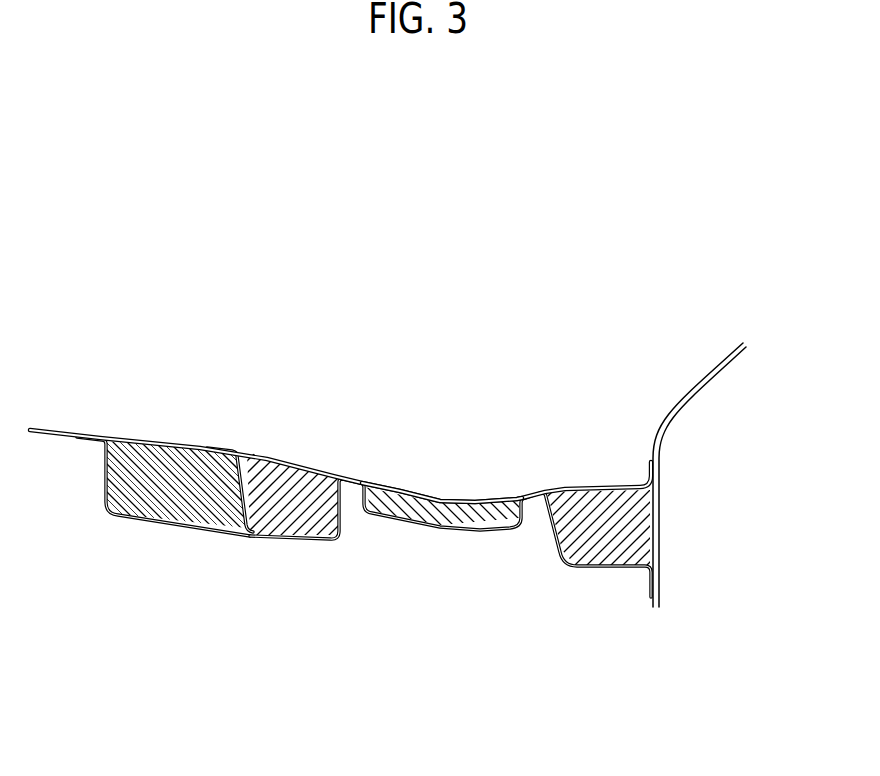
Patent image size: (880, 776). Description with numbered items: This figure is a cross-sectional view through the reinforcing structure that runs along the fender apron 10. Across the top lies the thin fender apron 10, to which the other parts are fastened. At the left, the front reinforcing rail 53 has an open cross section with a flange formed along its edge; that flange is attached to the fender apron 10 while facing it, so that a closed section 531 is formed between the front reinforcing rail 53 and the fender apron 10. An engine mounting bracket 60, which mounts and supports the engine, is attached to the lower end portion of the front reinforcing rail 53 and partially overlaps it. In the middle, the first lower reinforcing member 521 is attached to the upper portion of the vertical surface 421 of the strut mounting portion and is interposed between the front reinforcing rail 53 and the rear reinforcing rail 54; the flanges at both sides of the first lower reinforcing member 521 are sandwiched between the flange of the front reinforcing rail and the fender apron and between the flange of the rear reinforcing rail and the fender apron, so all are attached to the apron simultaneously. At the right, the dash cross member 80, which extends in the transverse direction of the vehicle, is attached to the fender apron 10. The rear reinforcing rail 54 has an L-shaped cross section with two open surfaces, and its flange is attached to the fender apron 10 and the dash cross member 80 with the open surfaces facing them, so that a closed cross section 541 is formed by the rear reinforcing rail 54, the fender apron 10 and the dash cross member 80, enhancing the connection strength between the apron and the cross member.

The fender apron 10 is at (42, 428).
The front reinforcing rail 53 is at (297, 541).
The closed section 531 is at (275, 486).
The engine mounting bracket 60 is at (103, 507).
The first lower reinforcing member 521 is at (455, 532).
The vertical surface 421 is at (486, 501).
The rear reinforcing rail 54 is at (607, 570).
The closed cross section 541 is at (627, 528).
The dash cross member 80 is at (671, 419).